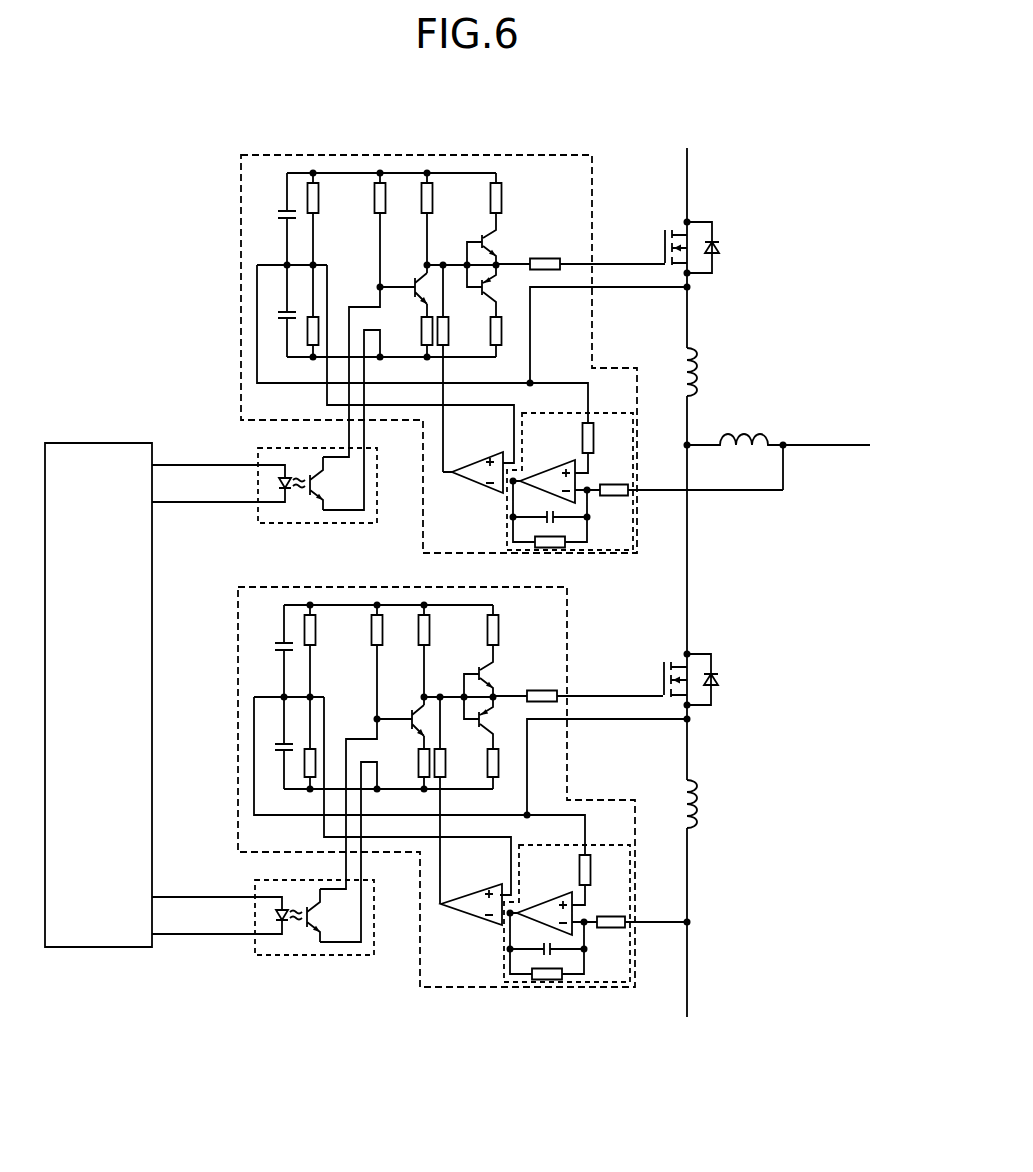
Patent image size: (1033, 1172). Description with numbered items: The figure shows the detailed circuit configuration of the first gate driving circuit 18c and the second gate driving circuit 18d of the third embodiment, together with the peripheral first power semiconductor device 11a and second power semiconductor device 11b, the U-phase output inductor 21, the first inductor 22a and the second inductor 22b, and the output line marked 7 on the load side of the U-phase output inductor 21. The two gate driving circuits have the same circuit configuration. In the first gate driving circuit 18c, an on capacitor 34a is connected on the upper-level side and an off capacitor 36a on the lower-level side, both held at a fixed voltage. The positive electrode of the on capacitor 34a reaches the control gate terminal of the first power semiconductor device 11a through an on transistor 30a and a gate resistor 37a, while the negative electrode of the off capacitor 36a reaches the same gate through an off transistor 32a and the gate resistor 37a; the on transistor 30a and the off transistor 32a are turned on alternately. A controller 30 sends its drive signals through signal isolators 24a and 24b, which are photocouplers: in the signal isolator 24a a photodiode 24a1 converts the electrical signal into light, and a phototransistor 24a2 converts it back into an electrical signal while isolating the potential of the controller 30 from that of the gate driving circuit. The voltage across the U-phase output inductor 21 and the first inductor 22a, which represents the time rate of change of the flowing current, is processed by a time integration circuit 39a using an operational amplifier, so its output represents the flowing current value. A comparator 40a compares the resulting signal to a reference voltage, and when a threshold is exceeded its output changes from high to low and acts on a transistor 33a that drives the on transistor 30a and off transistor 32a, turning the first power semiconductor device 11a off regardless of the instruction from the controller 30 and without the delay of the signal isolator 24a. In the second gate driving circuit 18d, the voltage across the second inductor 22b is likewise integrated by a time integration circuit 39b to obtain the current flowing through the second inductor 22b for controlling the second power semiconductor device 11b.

The output terminal 7 is at (822, 445).
The first power semiconductor device 11a is at (718, 248).
The second power semiconductor device 11b is at (734, 679).
The first gate driving circuit 18c is at (358, 152).
The second gate driving circuit 18d is at (385, 585).
The U-phase output inductor 21 is at (752, 426).
The first inductor 22a is at (708, 366).
The second inductor 22b is at (728, 804).
The signal isolator 24a is at (272, 526).
The photodiode 24a1 is at (278, 483).
The phototransistor 24a2 is at (322, 490).
The signal isolator 24b is at (314, 941).
The controller 30 is at (98, 443).
The on transistor 30a is at (486, 236).
The off transistor 32a is at (488, 298).
The transistor 33a is at (417, 281).
The on capacitor 34a is at (280, 212).
The off capacitor 36a is at (280, 312).
The gate resistor 37a is at (545, 258).
The time integration circuit 39a is at (507, 525).
The time integration circuit 39b is at (563, 913).
The comparator 40a is at (490, 460).